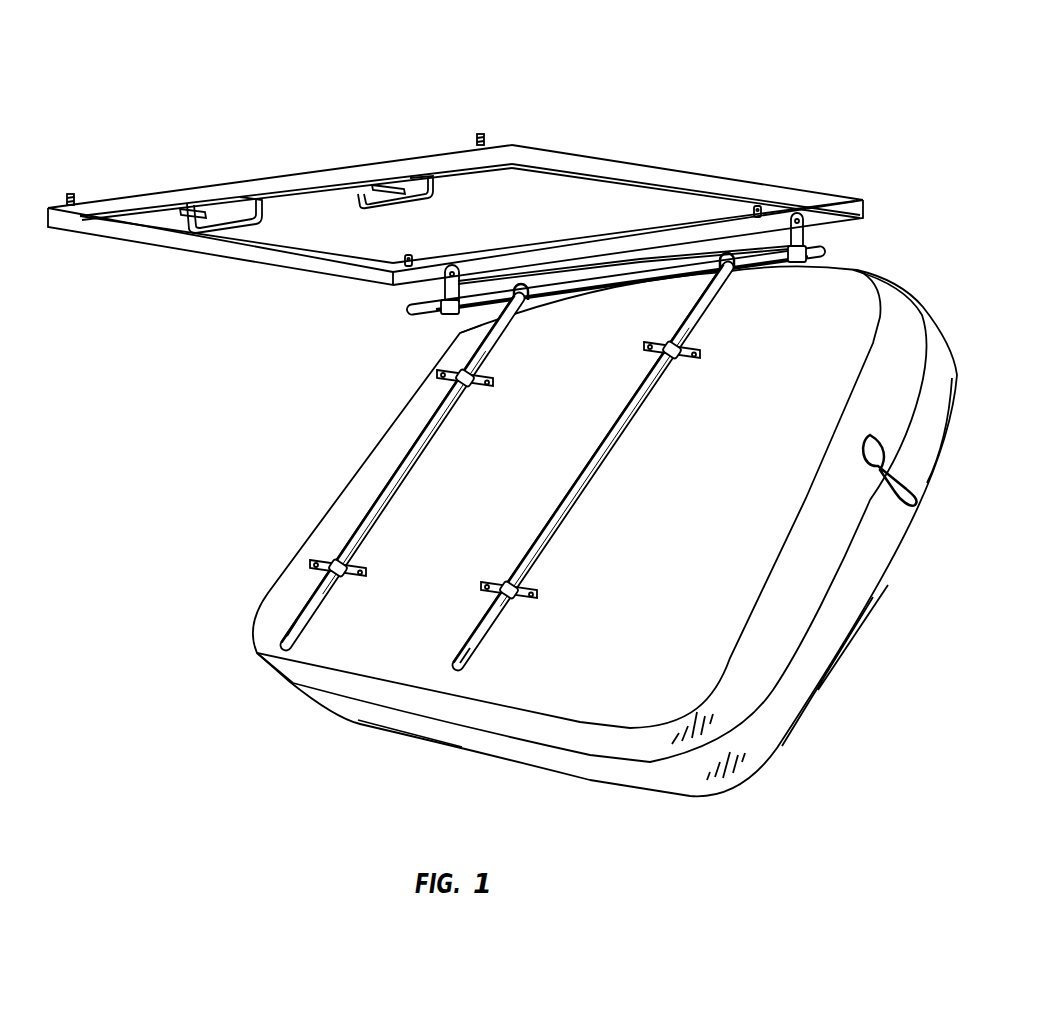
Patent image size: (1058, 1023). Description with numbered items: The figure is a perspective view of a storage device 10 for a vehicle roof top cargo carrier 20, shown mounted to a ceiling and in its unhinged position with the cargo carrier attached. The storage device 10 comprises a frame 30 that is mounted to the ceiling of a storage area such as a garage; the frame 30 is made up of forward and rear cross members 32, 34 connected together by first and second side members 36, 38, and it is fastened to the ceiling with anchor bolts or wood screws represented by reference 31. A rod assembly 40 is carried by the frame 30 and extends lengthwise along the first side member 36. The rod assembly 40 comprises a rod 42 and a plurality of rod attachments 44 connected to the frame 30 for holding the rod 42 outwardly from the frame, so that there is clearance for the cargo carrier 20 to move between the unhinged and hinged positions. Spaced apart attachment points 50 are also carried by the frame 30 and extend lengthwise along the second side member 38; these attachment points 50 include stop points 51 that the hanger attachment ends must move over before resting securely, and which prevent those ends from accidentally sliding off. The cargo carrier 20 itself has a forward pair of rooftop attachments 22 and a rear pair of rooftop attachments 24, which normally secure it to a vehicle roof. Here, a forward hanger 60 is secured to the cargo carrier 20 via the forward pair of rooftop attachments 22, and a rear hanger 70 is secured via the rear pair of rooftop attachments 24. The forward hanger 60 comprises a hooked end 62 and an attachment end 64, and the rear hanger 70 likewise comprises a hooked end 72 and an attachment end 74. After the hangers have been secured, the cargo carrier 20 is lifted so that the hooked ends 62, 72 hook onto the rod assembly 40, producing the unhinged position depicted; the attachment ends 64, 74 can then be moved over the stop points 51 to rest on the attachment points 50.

The storage device 10 is at (431, 78).
The cargo carrier 20 is at (605, 557).
The forward pair of rooftop attachments 22 is at (700, 350).
The rear pair of rooftop attachments 24 is at (502, 379).
The frame 30 is at (493, 200).
The anchor bolts or wood screws 31 is at (71, 195).
The forward cross member 32 is at (598, 163).
The rear cross member 34 is at (106, 233).
The first side member 36 is at (607, 240).
The second side member 38 is at (302, 173).
The rod assembly 40 is at (411, 313).
The rod 42 is at (459, 333).
The rod attachments 44 is at (448, 267).
The attachment points 50 is at (222, 206).
The stop points 51 is at (182, 210).
The forward hanger 60 is at (592, 474).
The hooked end 62 is at (726, 253).
The attachment end 64 is at (463, 663).
The rear hanger 70 is at (360, 471).
The hooked end 72 is at (527, 284).
The attachment end 74 is at (290, 617).